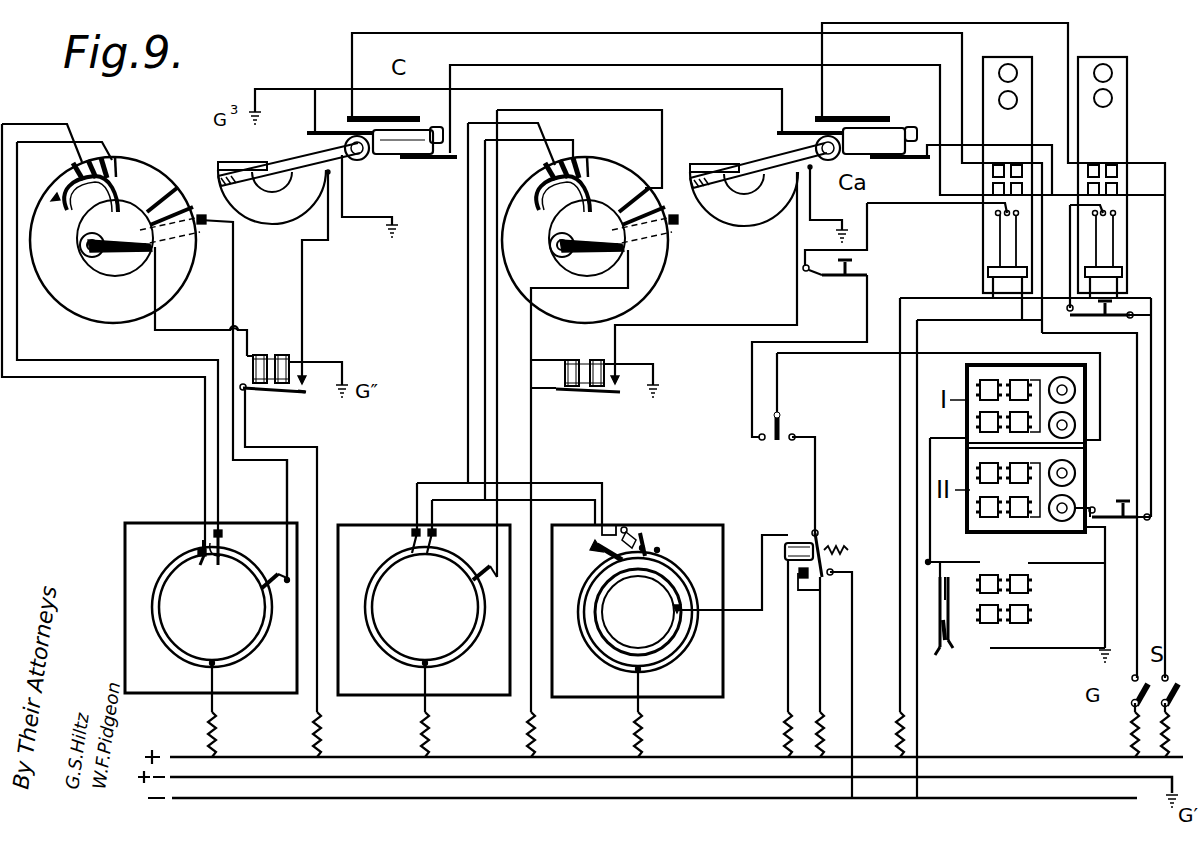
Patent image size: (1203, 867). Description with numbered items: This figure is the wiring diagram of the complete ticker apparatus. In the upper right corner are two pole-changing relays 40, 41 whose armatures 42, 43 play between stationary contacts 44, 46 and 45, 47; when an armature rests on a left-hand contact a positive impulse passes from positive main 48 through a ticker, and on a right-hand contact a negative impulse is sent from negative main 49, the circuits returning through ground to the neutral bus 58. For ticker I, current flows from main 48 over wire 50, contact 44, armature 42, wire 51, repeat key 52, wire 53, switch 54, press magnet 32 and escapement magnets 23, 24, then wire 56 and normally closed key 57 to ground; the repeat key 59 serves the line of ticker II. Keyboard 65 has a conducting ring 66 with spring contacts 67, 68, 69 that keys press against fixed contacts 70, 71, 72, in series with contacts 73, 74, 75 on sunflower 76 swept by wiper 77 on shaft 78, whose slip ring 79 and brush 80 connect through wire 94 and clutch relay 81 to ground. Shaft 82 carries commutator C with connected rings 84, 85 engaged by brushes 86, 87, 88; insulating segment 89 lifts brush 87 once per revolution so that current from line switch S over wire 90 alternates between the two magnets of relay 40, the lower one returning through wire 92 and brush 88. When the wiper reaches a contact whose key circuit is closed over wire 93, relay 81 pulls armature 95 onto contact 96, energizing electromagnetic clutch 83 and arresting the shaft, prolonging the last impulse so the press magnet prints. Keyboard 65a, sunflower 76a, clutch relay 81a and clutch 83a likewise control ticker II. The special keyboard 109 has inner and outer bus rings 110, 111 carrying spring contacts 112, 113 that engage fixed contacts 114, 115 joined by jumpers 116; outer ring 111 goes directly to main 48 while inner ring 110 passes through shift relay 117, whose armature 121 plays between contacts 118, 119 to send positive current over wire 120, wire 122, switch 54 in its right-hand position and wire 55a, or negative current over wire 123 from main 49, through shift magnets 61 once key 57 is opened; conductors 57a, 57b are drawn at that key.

The escapement magnet 23 is at (989, 380).
The escapement magnet 24 is at (1020, 380).
The press magnet 32 is at (1076, 392).
The relay 40 is at (1007, 188).
The relay 41 is at (1098, 182).
The armature 42 is at (1006, 217).
The armature 43 is at (1104, 217).
The contact 44 is at (995, 213).
The contact 45 is at (1114, 217).
The contact 46 is at (1015, 217).
The contact 47 is at (1098, 213).
The positive main 48 is at (704, 758).
The negative main 49 is at (708, 802).
The wire 50 is at (938, 300).
The wire 51 is at (908, 205).
The repeat key 52 is at (835, 282).
The wire 53 is at (805, 342).
The switch 54 is at (792, 430).
The wire 55a is at (806, 355).
The wire 56 is at (933, 484).
The key 57 is at (943, 652).
The conductor 57a is at (940, 562).
The conductor 57b is at (946, 590).
The neutral bus 58 is at (583, 775).
The repeat key 59 is at (1118, 310).
The shift magnets 61 is at (1022, 599).
The keyboard 65 is at (211, 608).
The keyboard 65a is at (485, 597).
The conducting ring 66 is at (172, 570).
The spring contact 67 is at (277, 578).
The spring contact 68 is at (226, 543).
The spring contact 69 is at (198, 534).
The fixed contact 70 is at (287, 583).
The fixed contact 71 is at (222, 530).
The fixed contact 72 is at (202, 535).
The sunflower contact 73 is at (178, 195).
The sunflower contact 74 is at (110, 157).
The sunflower contact 75 is at (72, 163).
The sunflower 76 is at (98, 302).
The sunflower 76a is at (623, 300).
The wiper 77 is at (75, 210).
The shaft 78 is at (205, 225).
The slip ring 79 is at (88, 250).
The brush 80 is at (160, 256).
The clutch relay 81 is at (297, 363).
The clutch relay 81a is at (595, 363).
The shaft 82 is at (285, 164).
The electromagnetic clutch 83 is at (267, 222).
The electromagnetic clutch 83a is at (740, 222).
The slip ring 84 is at (365, 160).
The slip ring 85 is at (412, 158).
The brush 86 is at (328, 131).
The brush 87 is at (400, 111).
The brush 88 is at (445, 160).
The insulating segment 89 is at (436, 126).
The wire 90 is at (1047, 272).
The wire 92 is at (545, 66).
The wire 93 is at (283, 470).
The wire 94 is at (222, 328).
The relay armature 95 is at (268, 394).
The contact 96 is at (310, 392).
The special keyboard 109 is at (637, 611).
The inner bus ring 110 is at (610, 640).
The outer bus ring 111 is at (660, 665).
The inner spring contact 112 is at (668, 555).
The outer spring contact 113 is at (614, 520).
The fixed contact 114 is at (634, 528).
The fixed contact 115 is at (655, 545).
The jumper 116 is at (598, 553).
The relay magnet 117 is at (800, 543).
The contact 118 is at (806, 588).
The contact 119 is at (825, 576).
The wire 120 is at (818, 660).
The relay armature 121 is at (823, 545).
The wire 122 is at (814, 478).
The wire 123 is at (852, 652).